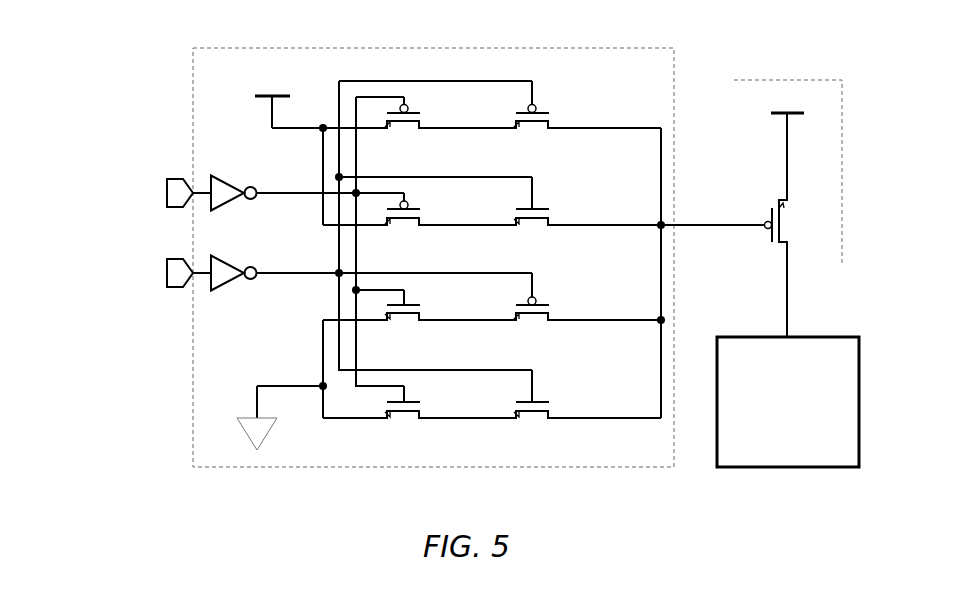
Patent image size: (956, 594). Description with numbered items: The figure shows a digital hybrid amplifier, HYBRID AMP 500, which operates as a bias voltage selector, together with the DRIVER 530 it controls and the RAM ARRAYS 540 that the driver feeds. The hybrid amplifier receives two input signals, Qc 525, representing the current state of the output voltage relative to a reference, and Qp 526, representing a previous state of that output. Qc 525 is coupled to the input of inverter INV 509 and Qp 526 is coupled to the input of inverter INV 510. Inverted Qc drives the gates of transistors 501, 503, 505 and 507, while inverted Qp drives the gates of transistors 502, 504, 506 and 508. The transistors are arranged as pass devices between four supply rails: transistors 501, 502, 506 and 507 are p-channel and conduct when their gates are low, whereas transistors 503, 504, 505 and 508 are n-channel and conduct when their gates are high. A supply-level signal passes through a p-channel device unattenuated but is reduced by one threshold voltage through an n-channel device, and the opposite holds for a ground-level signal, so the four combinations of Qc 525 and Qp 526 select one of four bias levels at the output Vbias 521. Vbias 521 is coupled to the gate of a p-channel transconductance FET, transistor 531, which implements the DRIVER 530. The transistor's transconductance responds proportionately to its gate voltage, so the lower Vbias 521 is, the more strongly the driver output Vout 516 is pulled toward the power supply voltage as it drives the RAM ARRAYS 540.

The hybrid amplifier 500 is at (192, 128).
The transistor Q501 501 is at (403, 130).
The transistor Q502 502 is at (532, 122).
The transistor Q503 503 is at (403, 417).
The transistor Q504 504 is at (532, 409).
The transistor Q505 505 is at (403, 322).
The transistor Q506 506 is at (532, 314).
The transistor Q507 507 is at (403, 226).
The transistor Q508 508 is at (532, 218).
The inverter INV 509 is at (307, 173).
The inverter INV 510 is at (371, 295).
The output Vout 516 is at (826, 290).
The bias voltage Vbias 521 is at (713, 205).
The signal Qc 525 is at (157, 193).
The signal Qp 526 is at (157, 273).
The driver 530 is at (733, 144).
The transconductance FET 531 is at (791, 179).
The RAM arrays 540 is at (788, 402).